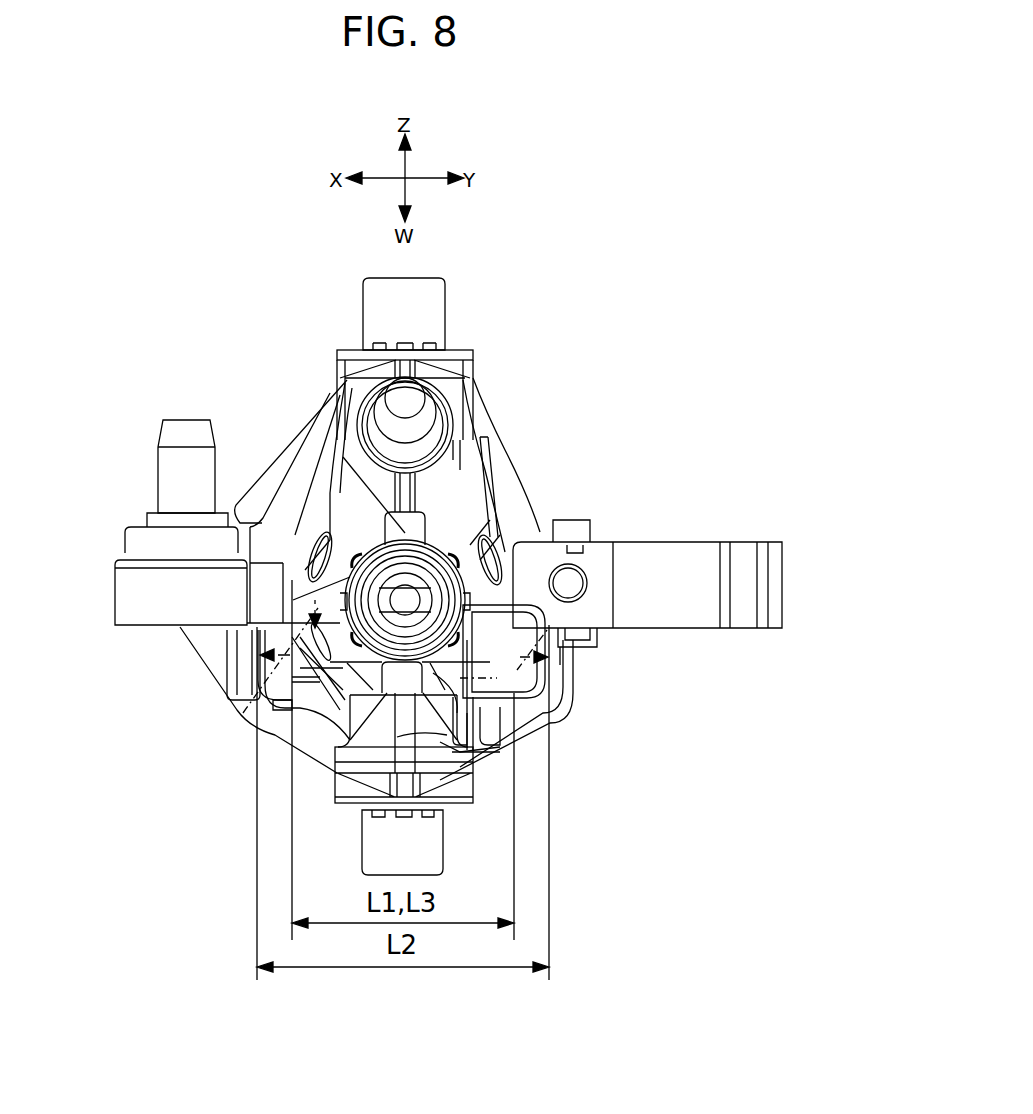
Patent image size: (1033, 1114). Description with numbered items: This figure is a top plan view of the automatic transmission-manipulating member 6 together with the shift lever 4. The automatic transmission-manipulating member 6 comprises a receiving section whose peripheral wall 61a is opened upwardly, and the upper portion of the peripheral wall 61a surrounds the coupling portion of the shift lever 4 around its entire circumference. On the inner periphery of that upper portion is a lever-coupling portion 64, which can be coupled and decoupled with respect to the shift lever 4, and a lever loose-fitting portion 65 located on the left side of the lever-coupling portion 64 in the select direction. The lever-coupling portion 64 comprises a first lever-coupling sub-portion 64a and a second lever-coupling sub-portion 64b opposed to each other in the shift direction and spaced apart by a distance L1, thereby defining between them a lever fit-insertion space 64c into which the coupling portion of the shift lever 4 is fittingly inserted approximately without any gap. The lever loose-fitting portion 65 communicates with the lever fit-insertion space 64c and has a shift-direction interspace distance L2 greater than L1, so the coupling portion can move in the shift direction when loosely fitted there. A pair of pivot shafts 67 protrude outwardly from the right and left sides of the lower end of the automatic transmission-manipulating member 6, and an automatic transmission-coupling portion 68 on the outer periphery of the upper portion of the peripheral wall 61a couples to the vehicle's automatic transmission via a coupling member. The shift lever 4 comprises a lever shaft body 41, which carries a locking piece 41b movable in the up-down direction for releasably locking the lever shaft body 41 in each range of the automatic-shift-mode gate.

The shift lever 4 is at (497, 593).
The automatic transmission-manipulating member 6 is at (580, 501).
The lever shaft body 41 is at (520, 603).
The locking piece 41b is at (455, 748).
The peripheral wall 61a is at (555, 655).
The lever-coupling portion 64 is at (653, 360).
The first lever-coupling sub-portion 64a is at (400, 540).
The second lever-coupling sub-portion 64b is at (478, 557).
The lever fit-insertion space 64c is at (492, 527).
The lever loose-fitting portion 65 is at (567, 643).
The pivot shafts 67 is at (445, 289).
The automatic transmission-coupling portion 68 is at (160, 470).